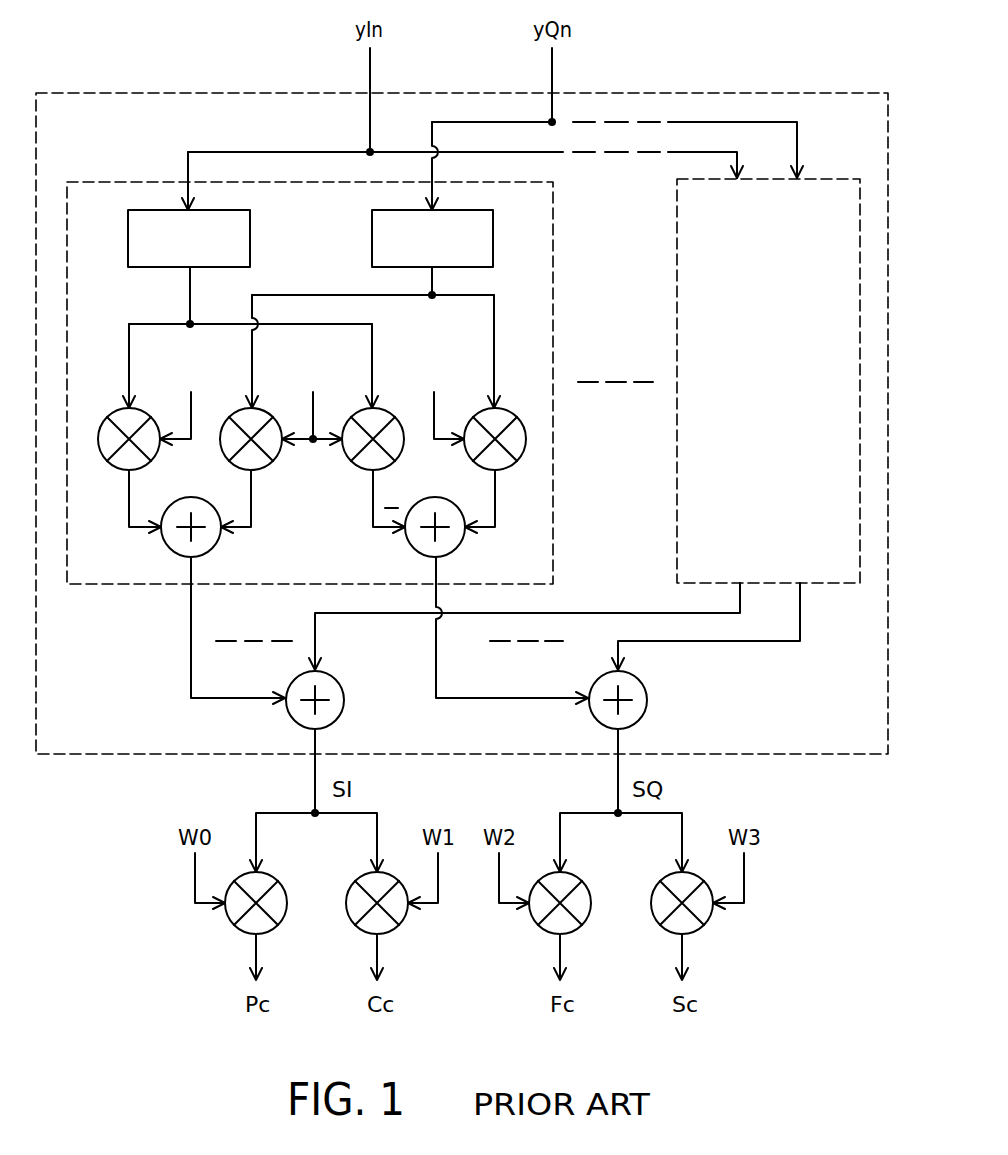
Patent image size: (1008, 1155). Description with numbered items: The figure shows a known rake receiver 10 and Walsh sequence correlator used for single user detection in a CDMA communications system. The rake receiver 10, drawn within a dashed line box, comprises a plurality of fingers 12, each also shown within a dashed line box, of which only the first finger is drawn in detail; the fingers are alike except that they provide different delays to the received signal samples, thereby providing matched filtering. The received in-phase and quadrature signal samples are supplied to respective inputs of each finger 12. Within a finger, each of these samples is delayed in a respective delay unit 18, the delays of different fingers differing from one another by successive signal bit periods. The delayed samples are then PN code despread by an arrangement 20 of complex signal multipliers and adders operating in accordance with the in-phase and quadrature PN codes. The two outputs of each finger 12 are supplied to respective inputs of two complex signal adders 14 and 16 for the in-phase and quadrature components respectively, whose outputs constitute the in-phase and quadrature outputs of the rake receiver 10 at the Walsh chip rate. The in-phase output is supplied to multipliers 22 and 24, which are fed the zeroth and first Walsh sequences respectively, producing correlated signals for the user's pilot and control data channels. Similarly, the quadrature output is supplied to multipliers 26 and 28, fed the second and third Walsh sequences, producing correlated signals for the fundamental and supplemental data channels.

The rake receiver 10 is at (277, 98).
The finger 12 is at (676, 243).
The complex signal adder 14 is at (345, 700).
The complex signal adder 16 is at (647, 700).
The delay unit 18 is at (250, 232).
The arrangement of complex signal multipliers and adders 20 is at (324, 497).
The multiplier 22 is at (272, 921).
The multiplier 24 is at (393, 921).
The multiplier 26 is at (577, 921).
The multiplier 28 is at (698, 921).